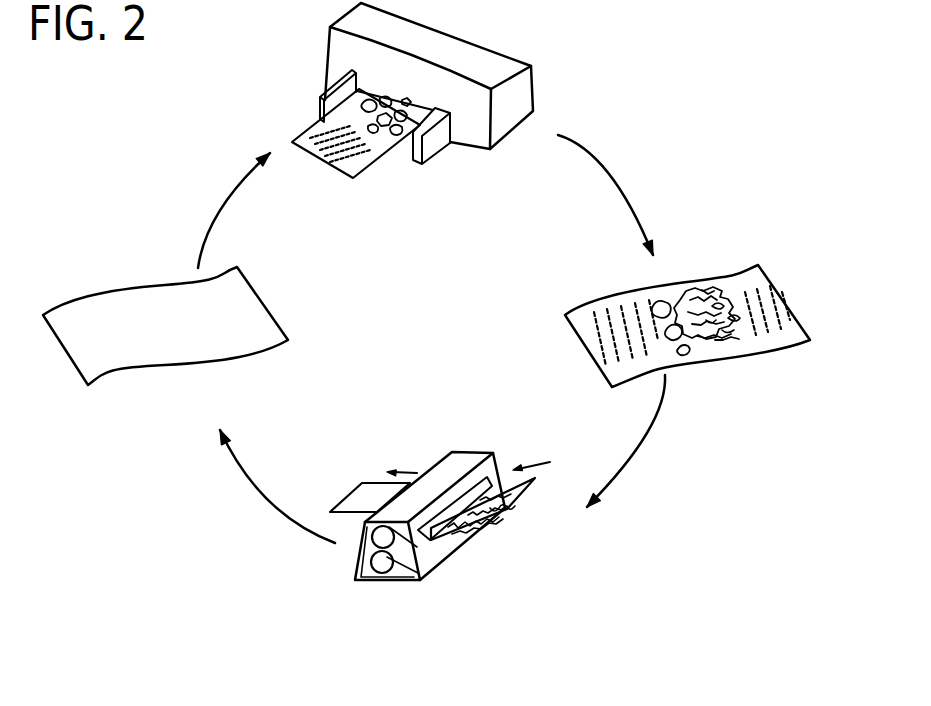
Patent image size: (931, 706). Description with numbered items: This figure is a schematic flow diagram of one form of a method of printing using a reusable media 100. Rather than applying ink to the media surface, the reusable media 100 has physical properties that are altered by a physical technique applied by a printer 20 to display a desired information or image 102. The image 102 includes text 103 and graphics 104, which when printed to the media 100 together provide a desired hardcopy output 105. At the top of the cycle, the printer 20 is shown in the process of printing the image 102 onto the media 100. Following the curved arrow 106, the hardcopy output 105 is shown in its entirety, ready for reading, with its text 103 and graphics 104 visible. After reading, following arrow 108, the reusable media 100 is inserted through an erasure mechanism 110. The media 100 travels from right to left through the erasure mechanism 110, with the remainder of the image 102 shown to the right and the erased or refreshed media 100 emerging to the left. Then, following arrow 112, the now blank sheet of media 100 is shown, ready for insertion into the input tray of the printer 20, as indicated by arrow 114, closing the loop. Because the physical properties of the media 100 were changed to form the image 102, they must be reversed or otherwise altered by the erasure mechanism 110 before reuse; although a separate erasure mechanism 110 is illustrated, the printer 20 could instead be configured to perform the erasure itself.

The printer 20 is at (433, 48).
The reusable media 100 is at (85, 312).
The image 102 is at (340, 122).
The text 103 is at (612, 320).
The graphics 104 is at (702, 330).
The hardcopy output 105 is at (733, 287).
The curved arrow 106 is at (608, 173).
The arrow 108 is at (647, 435).
The erasure mechanism 110 is at (432, 563).
The arrow 112 is at (268, 500).
The arrow 114 is at (220, 210).